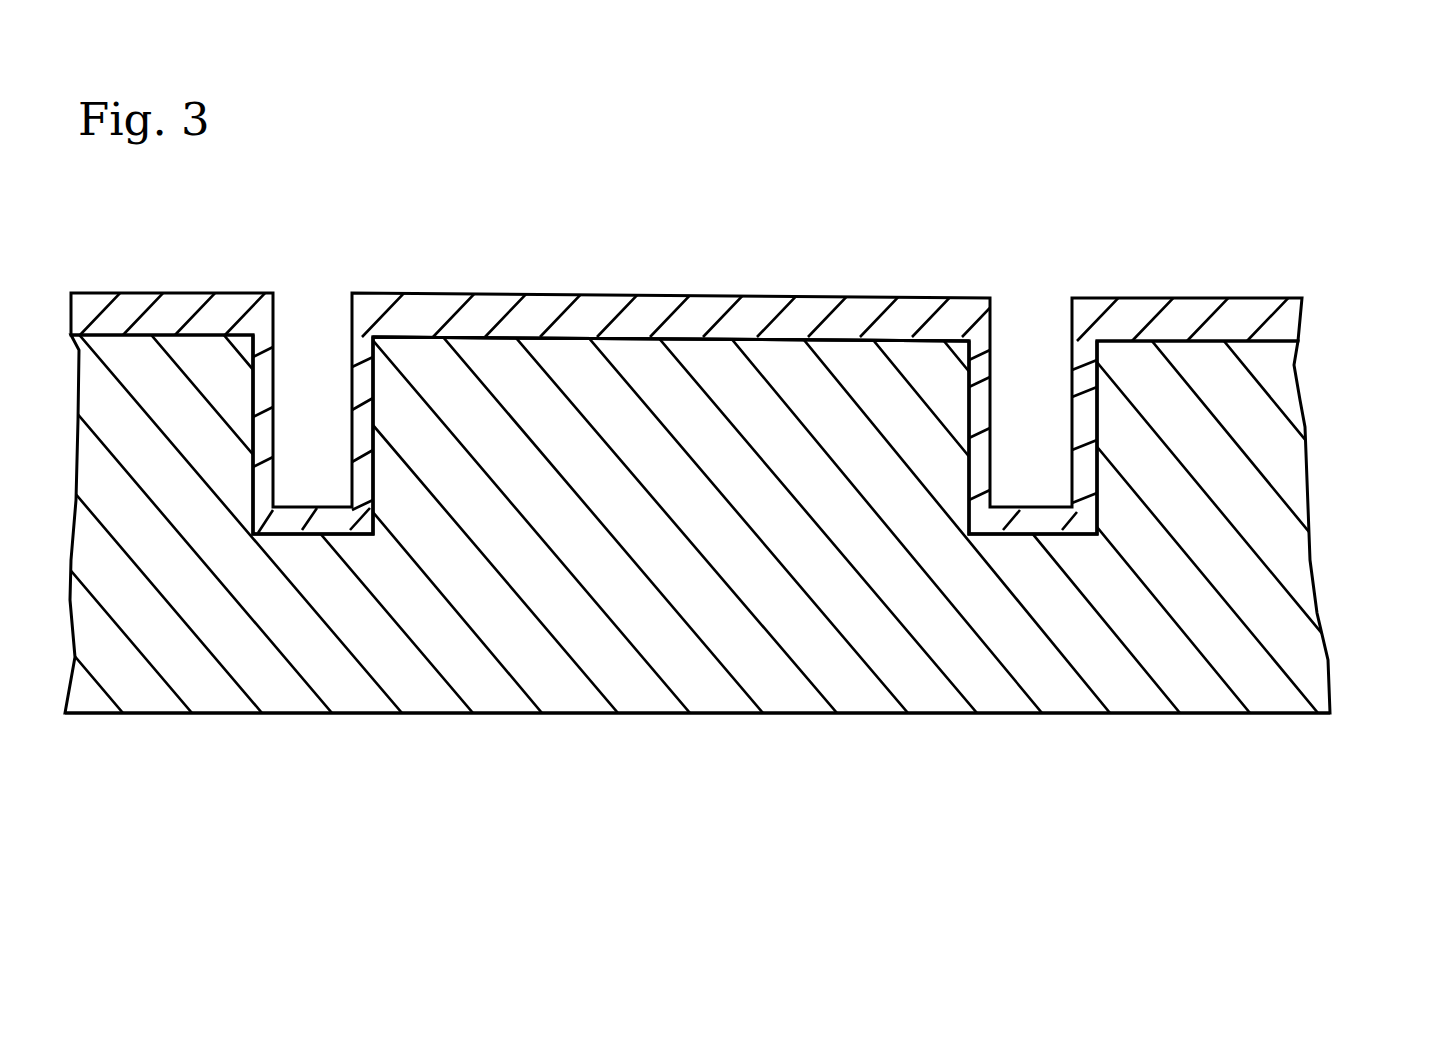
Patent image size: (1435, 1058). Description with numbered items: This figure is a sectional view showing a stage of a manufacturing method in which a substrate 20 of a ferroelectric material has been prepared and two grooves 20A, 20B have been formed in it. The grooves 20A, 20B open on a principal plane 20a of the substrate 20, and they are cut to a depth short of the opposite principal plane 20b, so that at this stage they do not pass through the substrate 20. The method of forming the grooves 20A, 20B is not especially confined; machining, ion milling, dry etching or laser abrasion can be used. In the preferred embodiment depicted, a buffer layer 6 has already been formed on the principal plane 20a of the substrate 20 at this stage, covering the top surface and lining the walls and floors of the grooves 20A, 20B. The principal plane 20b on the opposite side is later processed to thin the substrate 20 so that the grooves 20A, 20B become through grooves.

The substrate 20 is at (1283, 433).
The buffer layer 6 is at (762, 312).
The principal plane 20a is at (613, 335).
The principal plane 20b is at (1072, 703).
The groove 20A is at (1001, 343).
The groove 20B is at (347, 345).